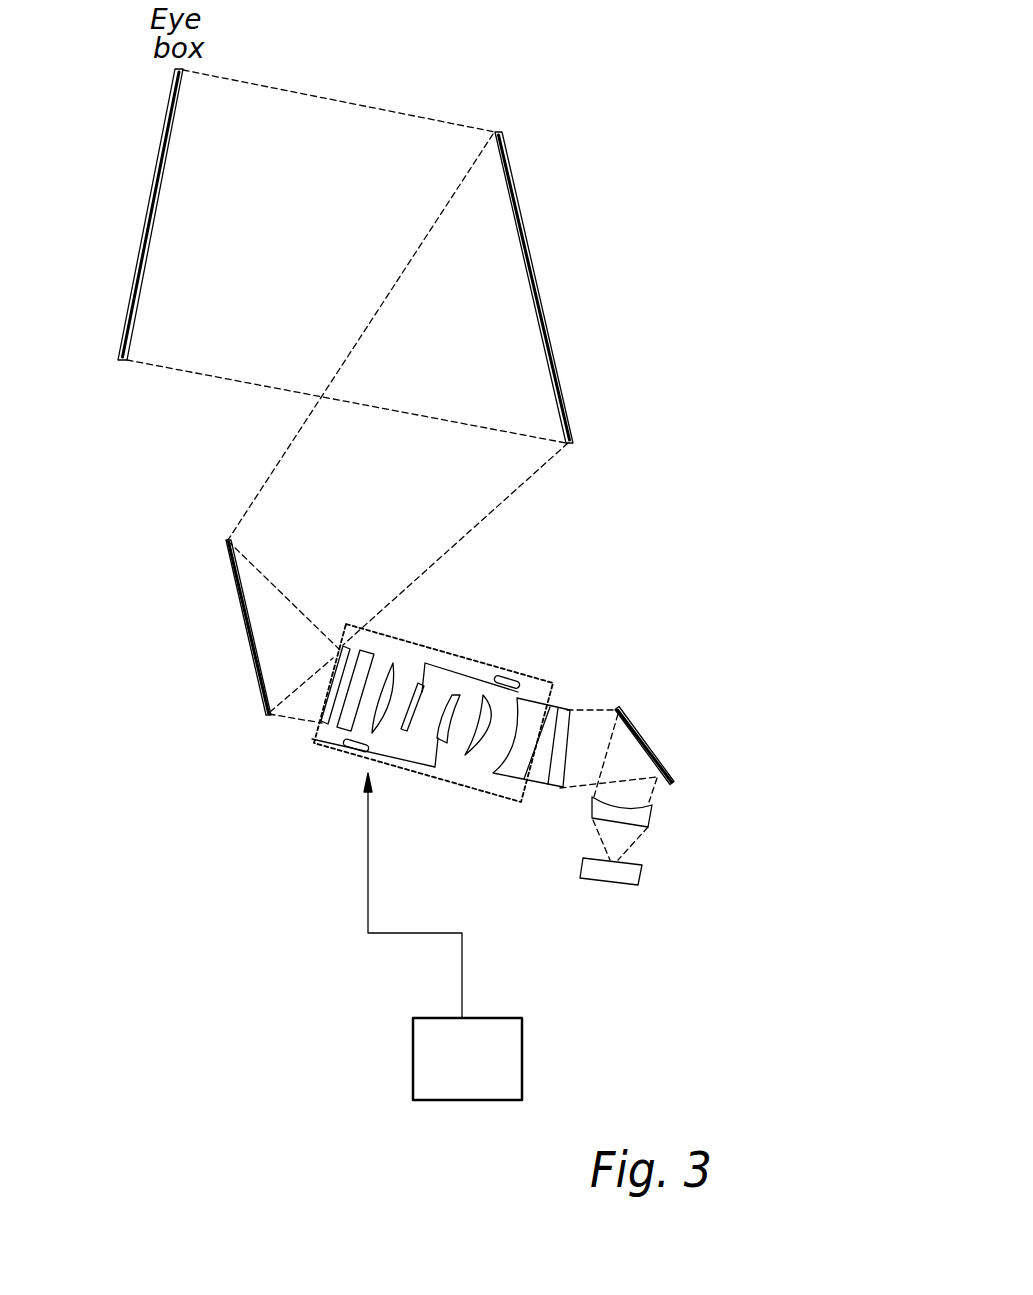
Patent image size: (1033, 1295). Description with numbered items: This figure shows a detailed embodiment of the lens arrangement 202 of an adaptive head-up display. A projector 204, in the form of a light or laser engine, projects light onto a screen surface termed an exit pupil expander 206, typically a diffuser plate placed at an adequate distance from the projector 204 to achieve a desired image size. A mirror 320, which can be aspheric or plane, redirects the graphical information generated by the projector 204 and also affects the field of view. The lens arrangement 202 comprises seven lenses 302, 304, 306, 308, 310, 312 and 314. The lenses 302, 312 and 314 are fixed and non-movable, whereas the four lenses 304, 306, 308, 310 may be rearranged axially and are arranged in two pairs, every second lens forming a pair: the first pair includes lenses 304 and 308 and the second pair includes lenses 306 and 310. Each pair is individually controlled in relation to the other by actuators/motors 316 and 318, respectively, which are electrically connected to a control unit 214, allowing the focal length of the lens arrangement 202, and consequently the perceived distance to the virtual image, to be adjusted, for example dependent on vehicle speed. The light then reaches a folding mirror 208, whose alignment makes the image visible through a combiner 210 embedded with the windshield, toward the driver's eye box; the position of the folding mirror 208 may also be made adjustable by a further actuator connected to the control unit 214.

The lens arrangement 202 is at (453, 653).
The projector 204 is at (613, 883).
The exit pupil expander 206 is at (562, 710).
The folding mirror 208 is at (237, 592).
The combiner 210 is at (537, 290).
The control unit 214 is at (462, 1100).
The lens 302 is at (542, 700).
The lens 304 is at (483, 742).
The lens 306 is at (450, 742).
The lens 308 is at (417, 683).
The lens 310 is at (392, 668).
The lens 312 is at (343, 726).
The lens 314 is at (333, 660).
The actuator/motor 316 is at (510, 672).
The actuator/motor 318 is at (355, 752).
The mirror 320 is at (657, 755).